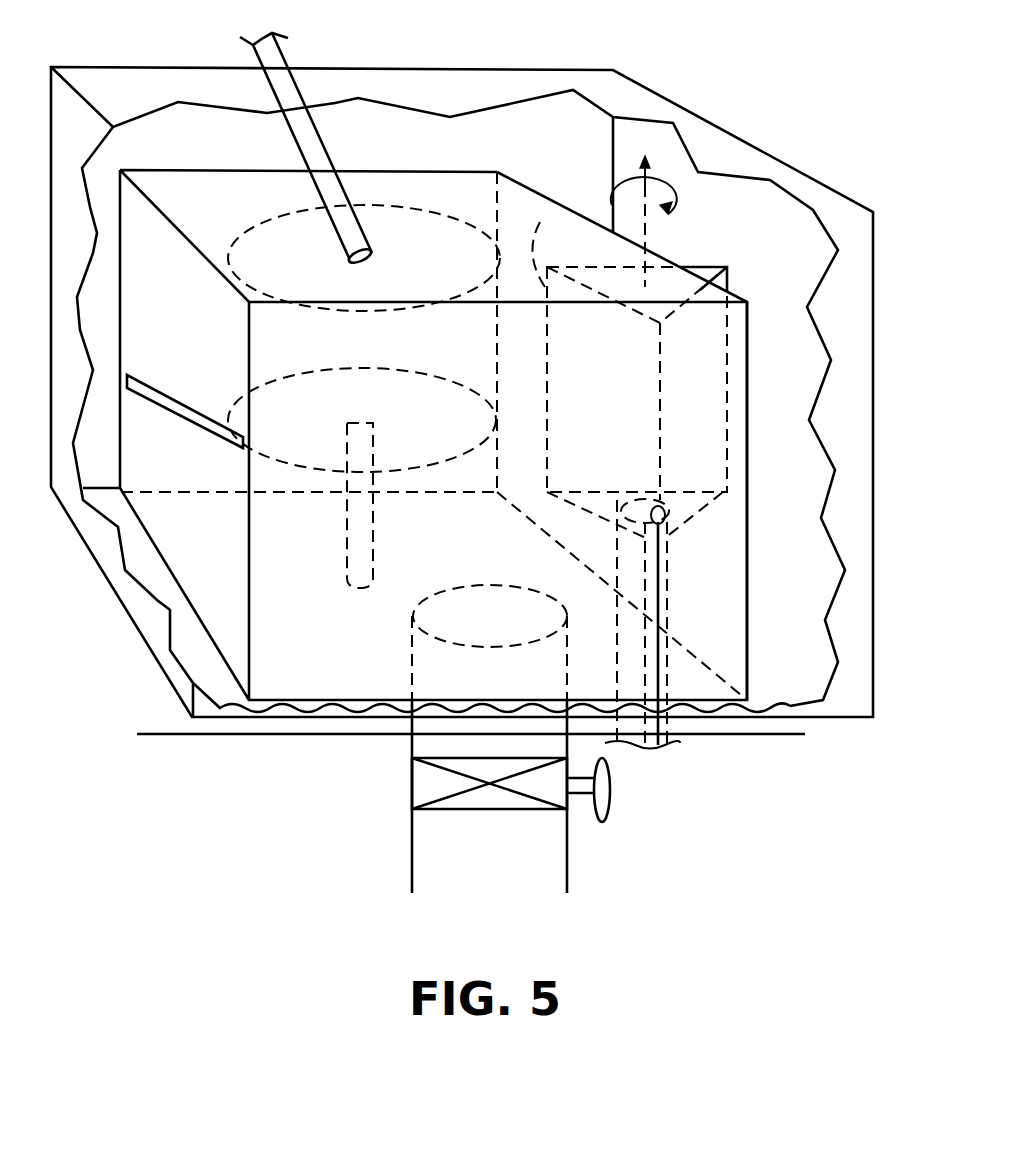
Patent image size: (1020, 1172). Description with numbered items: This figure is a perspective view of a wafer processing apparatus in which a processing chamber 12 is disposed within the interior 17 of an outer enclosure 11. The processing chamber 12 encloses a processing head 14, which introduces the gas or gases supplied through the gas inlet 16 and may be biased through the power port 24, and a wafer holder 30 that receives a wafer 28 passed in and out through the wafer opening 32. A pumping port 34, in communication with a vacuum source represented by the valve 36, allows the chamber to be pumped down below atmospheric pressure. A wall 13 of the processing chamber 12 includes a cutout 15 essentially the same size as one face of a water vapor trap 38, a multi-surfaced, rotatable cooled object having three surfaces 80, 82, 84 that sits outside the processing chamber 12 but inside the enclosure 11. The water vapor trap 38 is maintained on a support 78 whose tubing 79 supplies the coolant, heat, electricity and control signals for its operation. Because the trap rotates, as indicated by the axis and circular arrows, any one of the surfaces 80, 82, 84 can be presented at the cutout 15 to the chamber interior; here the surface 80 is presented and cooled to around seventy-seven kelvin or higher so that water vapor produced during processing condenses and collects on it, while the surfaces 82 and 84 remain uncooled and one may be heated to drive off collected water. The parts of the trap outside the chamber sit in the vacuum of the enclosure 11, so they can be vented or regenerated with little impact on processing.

The enclosure 11 is at (637, 102).
The processing chamber 12 is at (195, 168).
The wall 13 is at (510, 202).
The processing head 14 is at (273, 243).
The cutout 15 is at (540, 222).
The gas inlet 16 is at (337, 149).
The power port 24 is at (315, 151).
The interior 17 is at (673, 162).
The wafer 28 is at (288, 403).
The wafer holder 30 is at (357, 567).
The wafer opening 32 is at (157, 397).
The pumping port 34 is at (410, 667).
The valve 36 is at (587, 840).
The water vapor trap 38 is at (752, 370).
The support 78 is at (673, 607).
The tubing 79 is at (668, 556).
The surface 80 is at (545, 385).
The surface 82 is at (735, 437).
The surface 84 is at (702, 263).